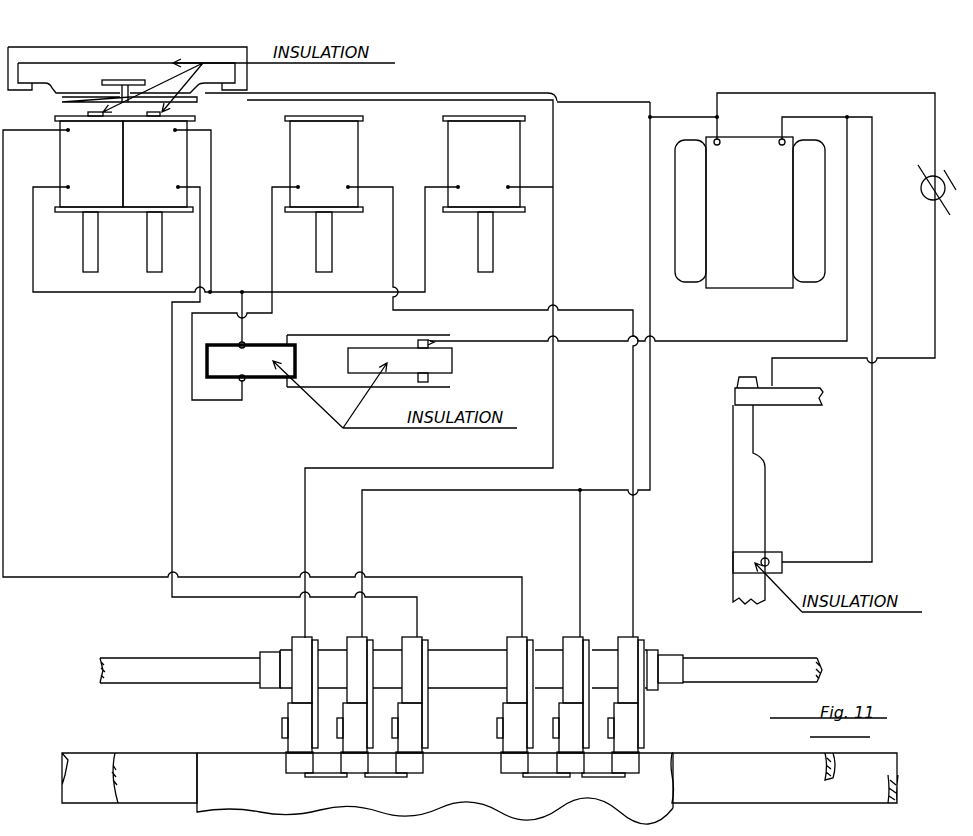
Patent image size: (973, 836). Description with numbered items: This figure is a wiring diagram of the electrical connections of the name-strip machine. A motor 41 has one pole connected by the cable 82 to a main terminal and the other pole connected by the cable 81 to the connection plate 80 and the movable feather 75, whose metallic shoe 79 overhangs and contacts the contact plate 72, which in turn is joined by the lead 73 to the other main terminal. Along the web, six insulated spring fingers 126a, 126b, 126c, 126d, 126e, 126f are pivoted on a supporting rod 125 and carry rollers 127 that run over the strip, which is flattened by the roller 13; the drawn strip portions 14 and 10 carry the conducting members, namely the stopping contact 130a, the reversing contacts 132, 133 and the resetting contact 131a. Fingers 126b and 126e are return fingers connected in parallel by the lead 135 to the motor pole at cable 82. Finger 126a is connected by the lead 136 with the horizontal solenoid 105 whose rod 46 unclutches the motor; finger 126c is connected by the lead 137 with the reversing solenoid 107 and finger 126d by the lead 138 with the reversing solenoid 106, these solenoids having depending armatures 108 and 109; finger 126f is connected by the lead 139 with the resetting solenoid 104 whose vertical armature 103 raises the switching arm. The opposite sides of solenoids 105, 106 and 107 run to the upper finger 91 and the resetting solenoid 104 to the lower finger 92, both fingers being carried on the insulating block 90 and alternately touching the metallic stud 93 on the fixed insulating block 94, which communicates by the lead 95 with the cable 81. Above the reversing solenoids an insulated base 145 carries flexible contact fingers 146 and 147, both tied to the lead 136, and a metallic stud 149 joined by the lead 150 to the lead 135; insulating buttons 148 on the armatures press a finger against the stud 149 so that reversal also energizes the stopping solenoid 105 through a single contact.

The insulated base 145 is at (133, 76).
The metallic stud 149 is at (115, 80).
The flexible contact finger 146 is at (55, 96).
The flexible contact finger 147 is at (197, 99).
The insulating buttons 148 is at (153, 117).
The reversing solenoid 106 is at (125, 164).
The reversing solenoid 107 is at (155, 164).
The armature 108 is at (88, 232).
The armature 109 is at (152, 243).
The lead 138 is at (3, 215).
The lead 137 is at (172, 474).
The lead 139 is at (478, 309).
The lead 136 is at (353, 92).
The lead 150 is at (591, 102).
The lead 135 is at (650, 240).
The lead 95 is at (719, 340).
The cable 82 is at (835, 93).
The lead 73 is at (935, 313).
The cable 81 is at (872, 267).
The motor 41 is at (750, 212).
The solenoid 104 is at (324, 164).
The armature 103 is at (330, 250).
The horizontal solenoid 105 is at (484, 164).
The rod 46 is at (493, 247).
The insulating block 90 is at (267, 366).
The metallic finger 91 is at (322, 335).
The metallic finger 92 is at (325, 388).
The fixed insulating block 94 is at (452, 357).
The metallic stud 93 is at (428, 377).
The metallic shoe 79 is at (737, 378).
The contact plate 72 is at (777, 387).
The feather 75 is at (733, 432).
The connection plate 80 is at (770, 552).
The spring finger 126a is at (297, 640).
The spring finger 126b is at (355, 640).
The spring finger 126c is at (416, 643).
The spring finger 126d is at (515, 640).
The spring finger 126e is at (582, 642).
The spring finger 126f is at (645, 637).
The rollers 127 is at (352, 712).
The supporting rod 125 is at (755, 663).
The base 14 is at (129, 778).
The base 10 is at (435, 788).
The roller 13 is at (784, 778).
The stopping contact 130a is at (323, 787).
The reversing contact 132 is at (380, 777).
The reversing contact 133 is at (546, 787).
The resetting contact 131a is at (605, 787).